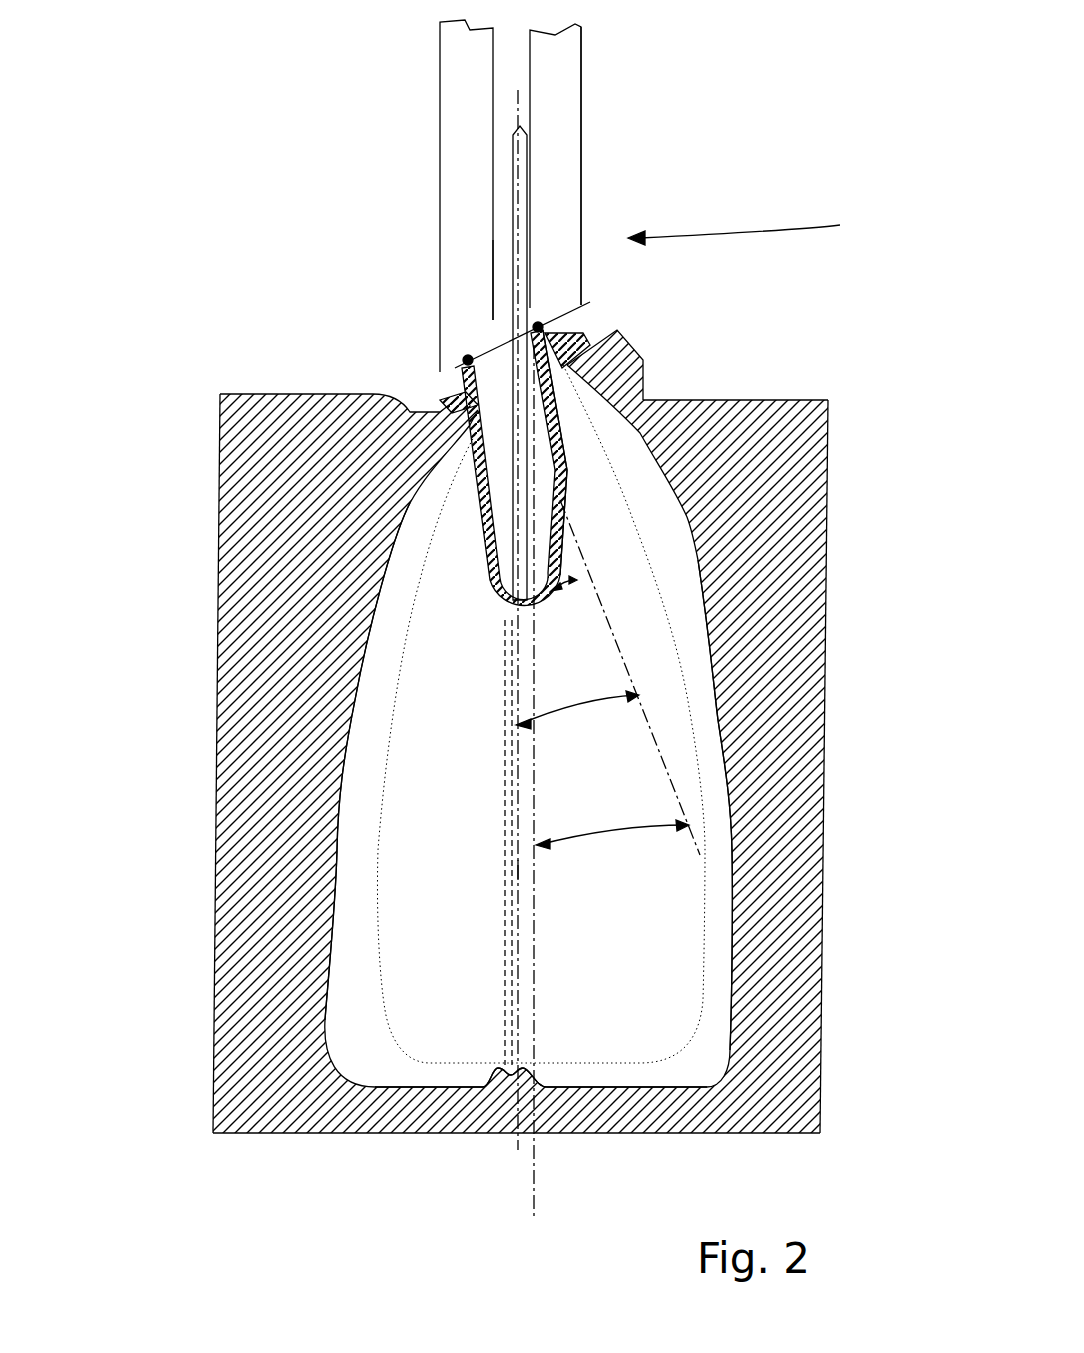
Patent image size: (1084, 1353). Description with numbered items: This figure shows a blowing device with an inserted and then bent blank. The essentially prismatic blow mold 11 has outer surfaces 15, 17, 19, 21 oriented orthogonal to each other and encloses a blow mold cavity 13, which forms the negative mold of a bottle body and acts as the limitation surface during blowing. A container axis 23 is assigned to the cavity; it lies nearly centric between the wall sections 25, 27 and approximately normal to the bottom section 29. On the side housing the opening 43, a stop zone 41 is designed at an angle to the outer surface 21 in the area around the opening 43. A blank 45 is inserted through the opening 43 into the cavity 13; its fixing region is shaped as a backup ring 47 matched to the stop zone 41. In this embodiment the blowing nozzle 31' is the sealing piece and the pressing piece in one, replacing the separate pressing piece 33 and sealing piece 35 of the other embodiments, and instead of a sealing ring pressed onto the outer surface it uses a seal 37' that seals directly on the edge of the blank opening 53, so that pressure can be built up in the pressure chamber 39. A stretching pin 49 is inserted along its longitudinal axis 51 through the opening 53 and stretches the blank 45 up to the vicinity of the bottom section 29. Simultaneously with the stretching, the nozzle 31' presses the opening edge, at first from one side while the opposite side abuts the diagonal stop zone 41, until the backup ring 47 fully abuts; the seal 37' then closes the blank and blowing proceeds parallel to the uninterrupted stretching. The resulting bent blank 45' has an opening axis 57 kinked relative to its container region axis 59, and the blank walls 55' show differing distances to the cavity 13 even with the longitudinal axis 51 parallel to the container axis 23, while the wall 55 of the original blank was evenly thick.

The blow mold 11 is at (826, 698).
The blow mold cavity 13 is at (603, 691).
The outer surface 15 is at (824, 838).
The outer surface 17 is at (572, 1133).
The outer surface 19 is at (213, 860).
The outer surface 21 is at (782, 400).
The container axis 23 is at (536, 927).
The wall section 25 is at (344, 855).
The wall section 27 is at (722, 857).
The bottom section 29 is at (600, 1090).
The blowing nozzle 31' is at (748, 226).
The pressing piece 33 is at (581, 148).
The sealing piece 35 is at (582, 162).
The inclined neck plane 37' is at (591, 310).
The pressure chamber 39 is at (498, 198).
The stop zone 41 is at (452, 393).
The opening 43 is at (461, 327).
The blank 45 is at (490, 478).
The blank 45' is at (448, 749).
The backup ring 47 is at (578, 346).
The stretching pin 49 is at (510, 160).
The longitudinal axis 51 is at (508, 830).
The opening 53 is at (480, 330).
The wall 55 is at (731, 452).
The blank wall 55' is at (612, 714).
The opening axis 57 is at (620, 645).
The container region axis 59 is at (545, 873).